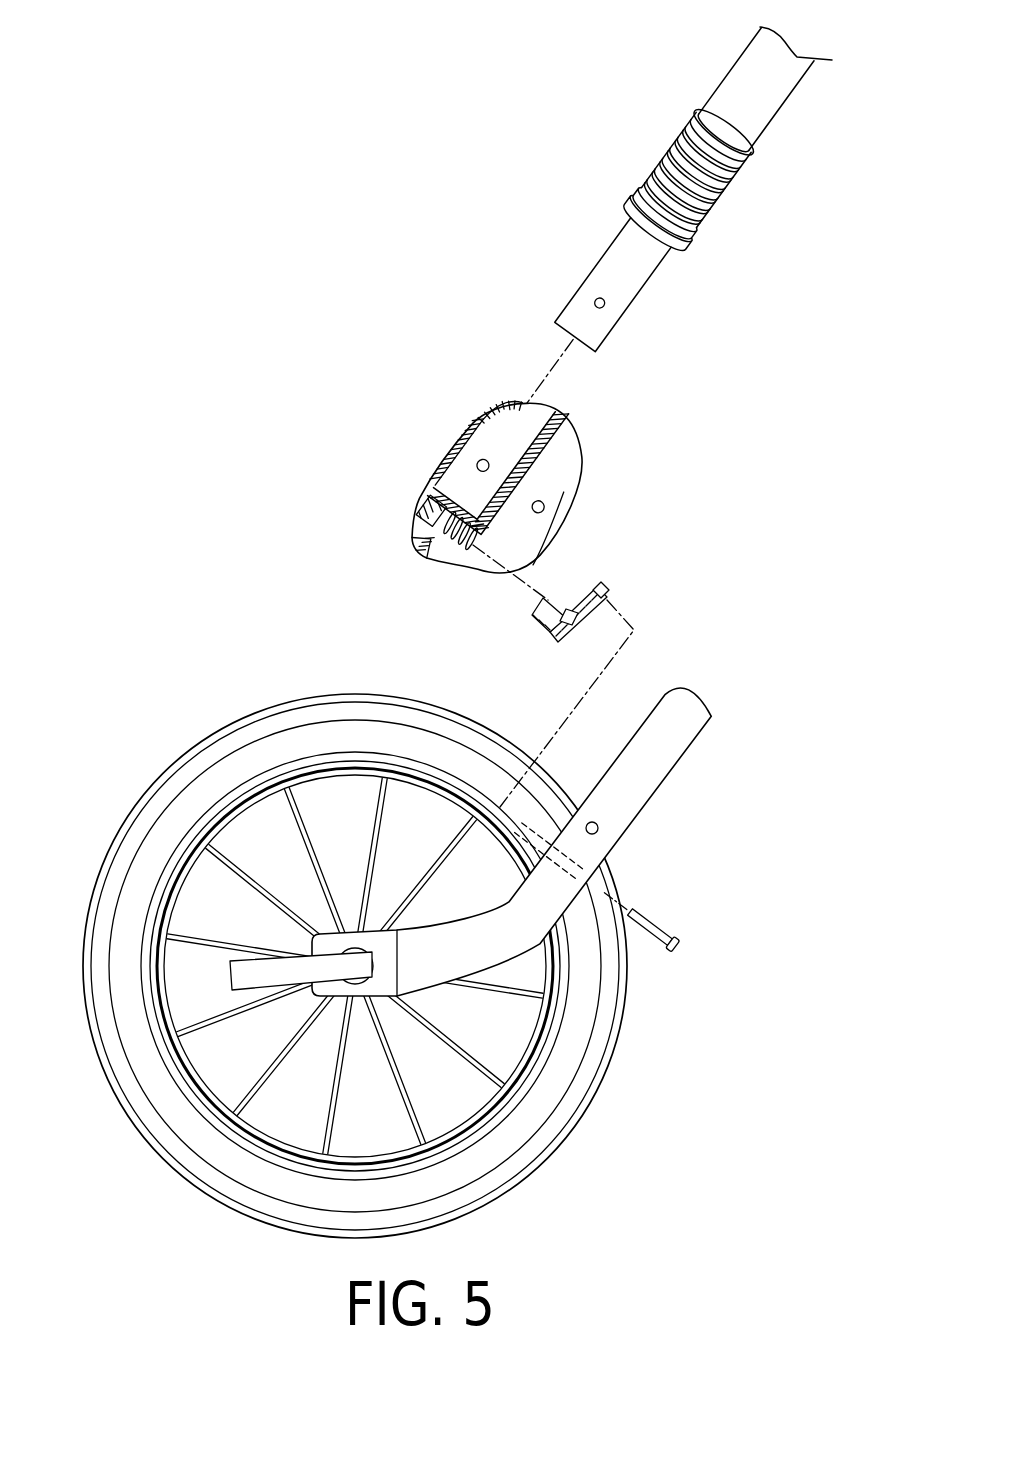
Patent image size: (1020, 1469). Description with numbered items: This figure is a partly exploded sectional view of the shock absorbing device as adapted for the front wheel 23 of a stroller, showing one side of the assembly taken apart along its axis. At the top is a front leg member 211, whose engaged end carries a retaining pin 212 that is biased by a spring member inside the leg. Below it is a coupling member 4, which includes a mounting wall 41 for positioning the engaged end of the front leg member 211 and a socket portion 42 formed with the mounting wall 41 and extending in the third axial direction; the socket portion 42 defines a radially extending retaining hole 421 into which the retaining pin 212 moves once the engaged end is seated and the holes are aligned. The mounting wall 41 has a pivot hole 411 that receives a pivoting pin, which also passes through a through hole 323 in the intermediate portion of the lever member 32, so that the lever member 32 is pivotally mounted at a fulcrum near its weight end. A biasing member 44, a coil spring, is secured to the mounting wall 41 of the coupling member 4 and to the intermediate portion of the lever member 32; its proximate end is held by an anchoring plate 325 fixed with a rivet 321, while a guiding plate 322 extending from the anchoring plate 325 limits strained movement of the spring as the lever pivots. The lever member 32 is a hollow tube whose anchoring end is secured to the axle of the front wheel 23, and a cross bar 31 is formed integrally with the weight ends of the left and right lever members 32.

The coupling member 4 is at (508, 484).
The mounting wall 41 is at (550, 507).
The pivot hole 411 is at (545, 505).
The socket portion 42 is at (473, 404).
The retaining hole 421 is at (481, 458).
The biasing member 44 is at (440, 536).
The front leg member 211 is at (663, 301).
The retaining pin 212 is at (605, 303).
The front wheel 23 is at (588, 1073).
The cross bar 31 is at (515, 833).
The lever member 32 is at (640, 775).
The rivet 321 is at (652, 916).
The guiding plate 322 is at (576, 623).
The through hole 323 is at (598, 828).
The anchoring plate 325 is at (607, 594).